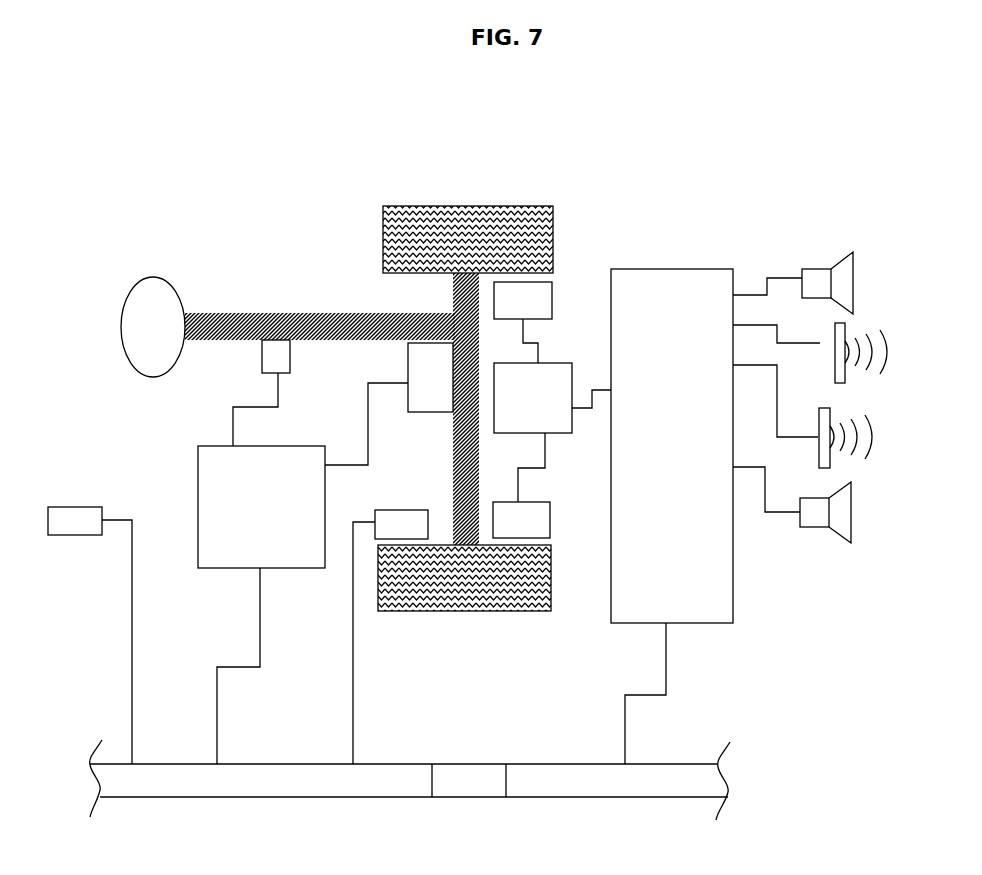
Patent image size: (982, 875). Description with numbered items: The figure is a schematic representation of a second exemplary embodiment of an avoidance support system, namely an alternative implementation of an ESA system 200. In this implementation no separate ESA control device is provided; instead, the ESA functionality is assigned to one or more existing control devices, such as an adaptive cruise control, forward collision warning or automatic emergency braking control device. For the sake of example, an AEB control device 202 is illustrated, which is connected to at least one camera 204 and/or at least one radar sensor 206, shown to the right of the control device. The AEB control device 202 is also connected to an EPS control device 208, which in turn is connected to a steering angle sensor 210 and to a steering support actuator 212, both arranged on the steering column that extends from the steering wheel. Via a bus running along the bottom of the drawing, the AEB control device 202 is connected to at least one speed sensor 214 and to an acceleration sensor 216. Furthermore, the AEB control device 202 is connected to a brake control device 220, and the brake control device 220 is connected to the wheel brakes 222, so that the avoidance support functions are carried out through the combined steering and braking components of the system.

The ESA system 200 is at (318, 160).
The AEB control device 202 is at (715, 516).
The camera 204 is at (818, 267).
The radar sensor 206 is at (817, 447).
The EPS control device 208 is at (261, 605).
The steering angle sensor 210 is at (255, 360).
The steering support actuator 212 is at (397, 362).
The speed sensor 214 is at (390, 637).
The acceleration sensor 216 is at (90, 635).
The brake control device 220 is at (552, 398).
The wheel brakes 222 is at (522, 410).